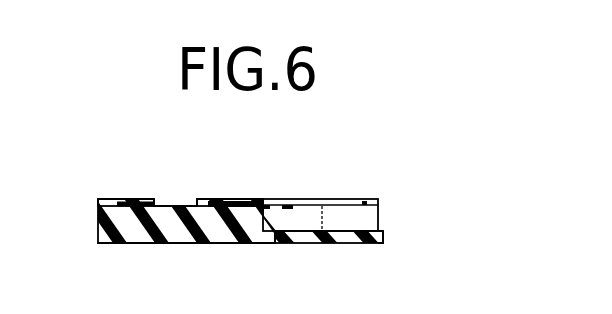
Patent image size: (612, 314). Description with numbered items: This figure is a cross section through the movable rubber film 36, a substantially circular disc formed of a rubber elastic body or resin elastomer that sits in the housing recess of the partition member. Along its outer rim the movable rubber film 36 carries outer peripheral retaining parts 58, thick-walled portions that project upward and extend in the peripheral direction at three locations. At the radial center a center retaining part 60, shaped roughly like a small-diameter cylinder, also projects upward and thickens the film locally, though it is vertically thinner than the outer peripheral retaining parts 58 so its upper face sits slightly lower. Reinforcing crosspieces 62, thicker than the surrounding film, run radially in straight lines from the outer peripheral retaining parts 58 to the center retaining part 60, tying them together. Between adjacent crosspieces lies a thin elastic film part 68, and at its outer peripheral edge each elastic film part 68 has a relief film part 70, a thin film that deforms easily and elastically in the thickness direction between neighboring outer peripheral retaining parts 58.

The movable rubber film 36 is at (385, 168).
The outer peripheral retaining part 58 is at (112, 215).
The center retaining part 60 is at (237, 218).
The reinforcing crosspiece 62 is at (165, 228).
The elastic film part 68 is at (291, 242).
The relief film part 70 is at (376, 244).